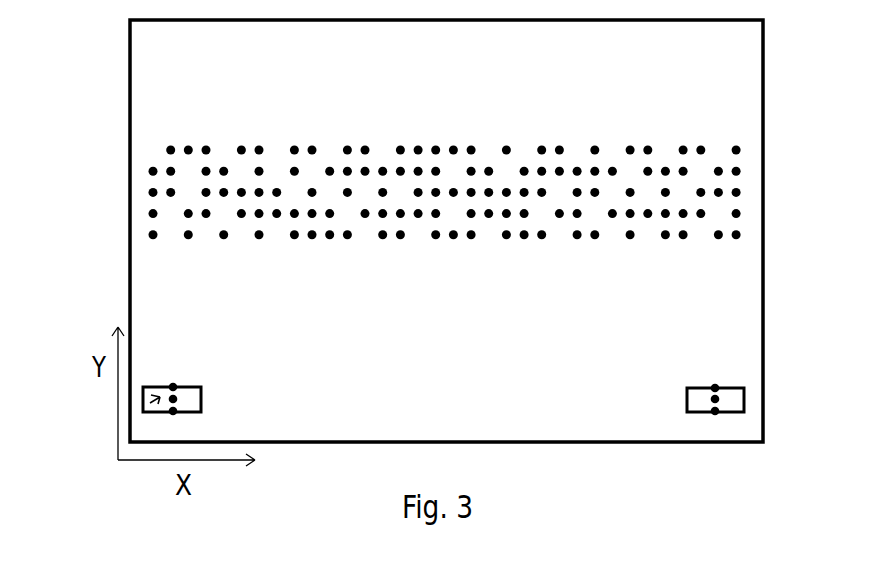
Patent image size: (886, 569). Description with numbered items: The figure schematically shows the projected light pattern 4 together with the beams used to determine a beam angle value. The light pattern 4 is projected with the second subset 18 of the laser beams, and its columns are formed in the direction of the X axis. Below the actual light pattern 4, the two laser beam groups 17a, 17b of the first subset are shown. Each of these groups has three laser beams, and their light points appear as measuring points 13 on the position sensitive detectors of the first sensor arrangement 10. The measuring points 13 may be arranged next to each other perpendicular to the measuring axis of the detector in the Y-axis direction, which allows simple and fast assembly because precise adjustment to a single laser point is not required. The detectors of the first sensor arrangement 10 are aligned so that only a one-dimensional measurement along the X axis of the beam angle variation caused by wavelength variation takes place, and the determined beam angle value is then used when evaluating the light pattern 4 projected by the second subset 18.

The light pattern 4 is at (236, 112).
The second subset of the laser beams 18 is at (782, 142).
The first sensor arrangement 10 is at (201, 393).
The measuring points 13 is at (150, 403).
The laser beam group 17a is at (180, 401).
The laser beam group 17b is at (710, 399).